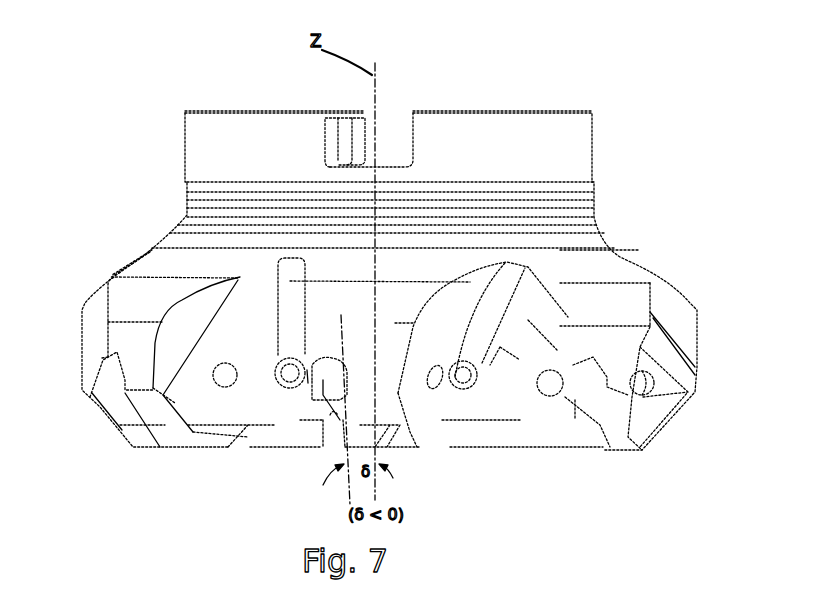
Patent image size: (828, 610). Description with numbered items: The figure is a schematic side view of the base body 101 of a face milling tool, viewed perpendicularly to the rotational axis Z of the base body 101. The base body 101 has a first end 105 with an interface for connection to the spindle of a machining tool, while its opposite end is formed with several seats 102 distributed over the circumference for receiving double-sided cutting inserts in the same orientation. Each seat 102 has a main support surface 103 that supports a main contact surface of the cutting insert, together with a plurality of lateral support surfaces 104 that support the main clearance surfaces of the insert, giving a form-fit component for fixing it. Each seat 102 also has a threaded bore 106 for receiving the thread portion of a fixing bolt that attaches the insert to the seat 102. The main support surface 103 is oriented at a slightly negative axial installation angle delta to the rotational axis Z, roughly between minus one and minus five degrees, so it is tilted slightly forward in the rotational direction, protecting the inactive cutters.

The base body 101 is at (122, 192).
The seat 102 is at (125, 407).
The main support surface 103 is at (345, 420).
The lateral support surfaces 104 is at (500, 347).
The first end 105 is at (492, 113).
The threaded bore 106 is at (548, 377).